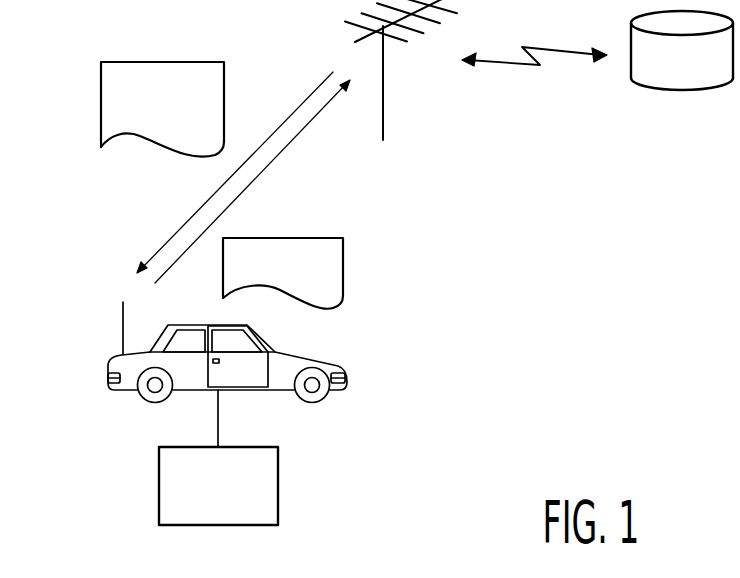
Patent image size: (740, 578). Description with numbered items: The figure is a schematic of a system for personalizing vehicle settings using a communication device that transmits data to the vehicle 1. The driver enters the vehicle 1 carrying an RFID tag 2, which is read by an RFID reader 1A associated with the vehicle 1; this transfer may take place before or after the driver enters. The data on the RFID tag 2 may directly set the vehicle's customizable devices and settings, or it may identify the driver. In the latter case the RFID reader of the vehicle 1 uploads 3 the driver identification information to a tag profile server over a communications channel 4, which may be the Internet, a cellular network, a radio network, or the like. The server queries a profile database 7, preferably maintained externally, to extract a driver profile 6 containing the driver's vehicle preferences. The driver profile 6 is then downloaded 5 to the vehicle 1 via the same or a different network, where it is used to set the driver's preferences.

The vehicle 1 is at (347, 375).
The RFID reader 1A is at (278, 477).
The RFID tag 2 is at (343, 268).
The upload 3 is at (302, 133).
The communications channel 4 is at (385, 97).
The download 5 is at (302, 100).
The driver profile 6 is at (101, 107).
The profile database 7 is at (663, 88).